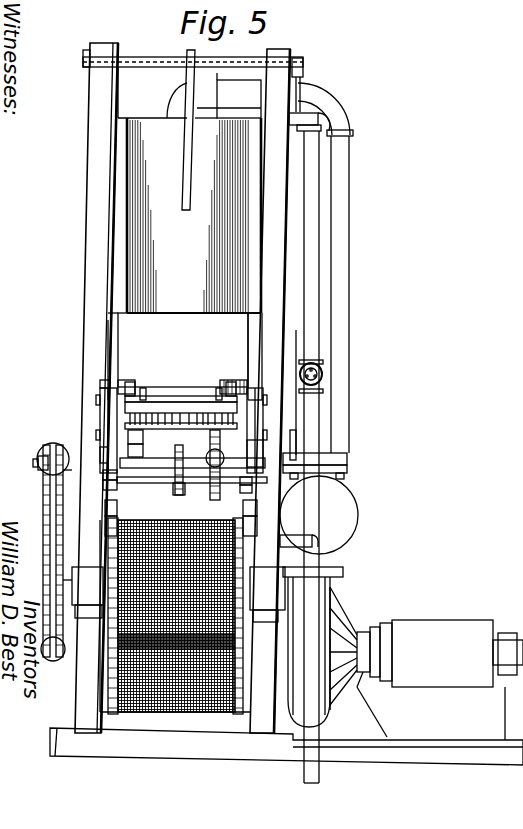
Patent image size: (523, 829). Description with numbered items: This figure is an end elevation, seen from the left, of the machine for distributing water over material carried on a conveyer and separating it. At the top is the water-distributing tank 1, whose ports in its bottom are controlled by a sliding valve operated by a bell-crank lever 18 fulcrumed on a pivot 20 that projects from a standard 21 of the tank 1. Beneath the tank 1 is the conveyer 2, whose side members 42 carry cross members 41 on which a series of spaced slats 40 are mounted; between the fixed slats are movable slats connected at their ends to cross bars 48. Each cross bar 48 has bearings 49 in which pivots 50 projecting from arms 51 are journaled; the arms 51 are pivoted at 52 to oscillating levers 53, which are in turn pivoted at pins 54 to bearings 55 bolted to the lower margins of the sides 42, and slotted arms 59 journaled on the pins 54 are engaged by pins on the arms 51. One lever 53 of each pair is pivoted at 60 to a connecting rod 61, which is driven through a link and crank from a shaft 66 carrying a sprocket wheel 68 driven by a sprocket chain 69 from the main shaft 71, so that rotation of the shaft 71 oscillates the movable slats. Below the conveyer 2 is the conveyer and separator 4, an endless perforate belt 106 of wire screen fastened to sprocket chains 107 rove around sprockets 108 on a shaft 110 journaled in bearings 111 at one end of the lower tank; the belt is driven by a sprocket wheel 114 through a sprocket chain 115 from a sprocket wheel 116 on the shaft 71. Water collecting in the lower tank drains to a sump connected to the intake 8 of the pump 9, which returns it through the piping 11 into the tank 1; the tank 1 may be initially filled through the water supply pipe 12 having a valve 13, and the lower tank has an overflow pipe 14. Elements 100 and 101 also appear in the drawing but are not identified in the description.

The water-distributing tank 1 is at (133, 117).
The conveyer 2 is at (135, 329).
The conveyer and separator 4 is at (183, 520).
The intake 8 is at (281, 632).
The pump 9 is at (342, 620).
The piping 11 is at (350, 218).
The water supply pipe 12 is at (312, 512).
The valve 13 is at (325, 374).
The overflow pipe 14 is at (310, 587).
The bell-crank lever 18 is at (187, 150).
The pivot 20 is at (138, 57).
The standard 21 is at (106, 43).
The slats 40 is at (160, 404).
The cross members 41 is at (190, 402).
The side members 42 is at (113, 345).
The cross bars 48 is at (185, 396).
The bearings 49 is at (131, 382).
The pivots 50 is at (143, 388).
The arms 51 is at (113, 412).
The pivot 52 is at (136, 440).
The oscillating levers 53 is at (136, 452).
The pins 54 is at (103, 457).
The bearings 55 is at (112, 395).
The arms 59 is at (118, 386).
The pivot 60 is at (103, 476).
The connecting rod 61 is at (106, 489).
The shaft 66 is at (150, 468).
The sprocket wheel 68 is at (214, 500).
The sprocket chain 69 is at (212, 450).
The shaft 71 is at (38, 462).
The rod 100 is at (178, 448).
The spring 101 is at (174, 495).
The endless perforate belt 106 is at (175, 715).
The sprocket chains 107 is at (105, 528).
The sprockets 108 is at (105, 509).
The shaft 110 is at (36, 556).
The bearings 111 is at (178, 594).
The sprocket wheel 114 is at (57, 661).
The sprocket chain 115 is at (48, 494).
The sprocket wheel 116 is at (58, 442).